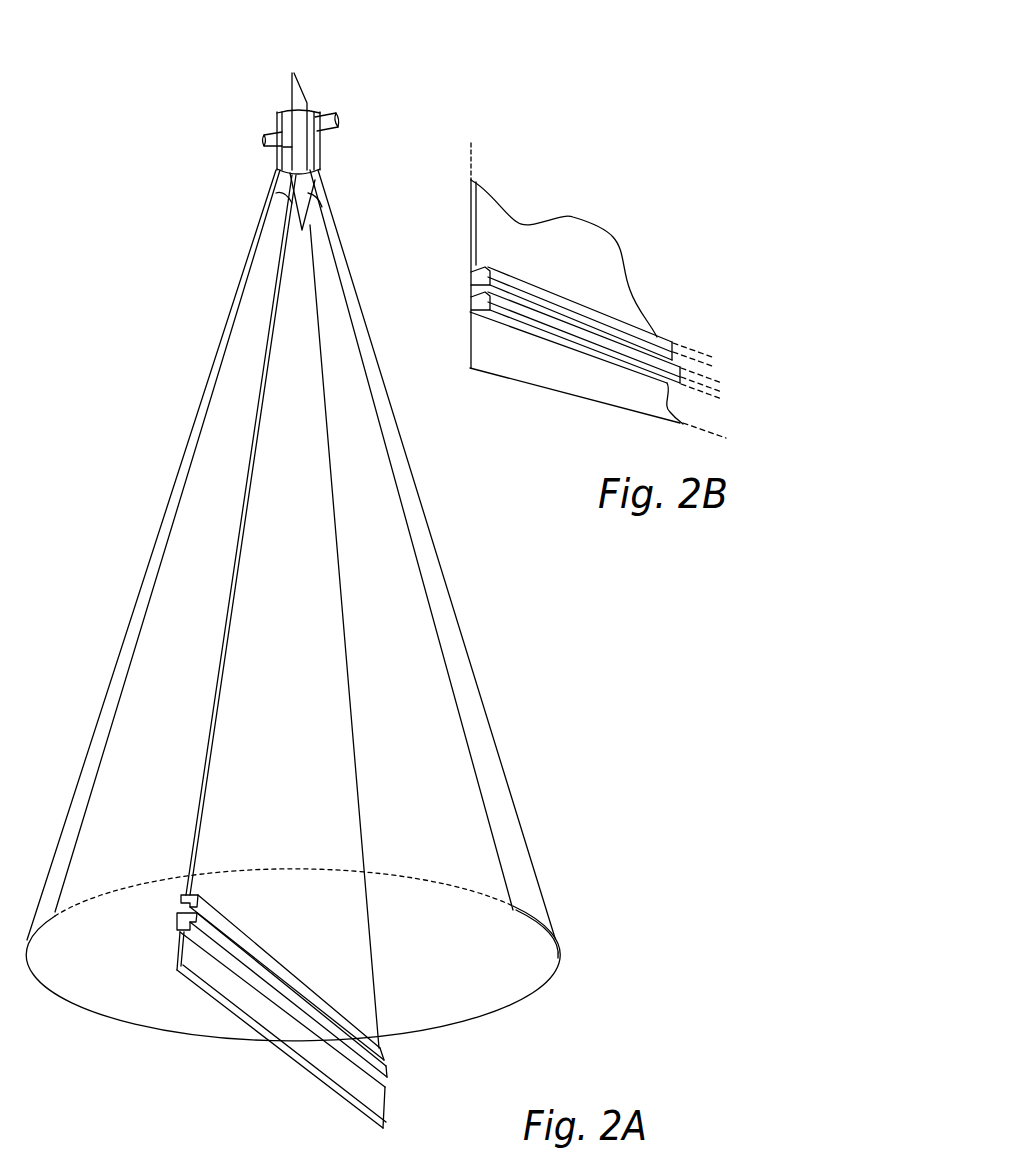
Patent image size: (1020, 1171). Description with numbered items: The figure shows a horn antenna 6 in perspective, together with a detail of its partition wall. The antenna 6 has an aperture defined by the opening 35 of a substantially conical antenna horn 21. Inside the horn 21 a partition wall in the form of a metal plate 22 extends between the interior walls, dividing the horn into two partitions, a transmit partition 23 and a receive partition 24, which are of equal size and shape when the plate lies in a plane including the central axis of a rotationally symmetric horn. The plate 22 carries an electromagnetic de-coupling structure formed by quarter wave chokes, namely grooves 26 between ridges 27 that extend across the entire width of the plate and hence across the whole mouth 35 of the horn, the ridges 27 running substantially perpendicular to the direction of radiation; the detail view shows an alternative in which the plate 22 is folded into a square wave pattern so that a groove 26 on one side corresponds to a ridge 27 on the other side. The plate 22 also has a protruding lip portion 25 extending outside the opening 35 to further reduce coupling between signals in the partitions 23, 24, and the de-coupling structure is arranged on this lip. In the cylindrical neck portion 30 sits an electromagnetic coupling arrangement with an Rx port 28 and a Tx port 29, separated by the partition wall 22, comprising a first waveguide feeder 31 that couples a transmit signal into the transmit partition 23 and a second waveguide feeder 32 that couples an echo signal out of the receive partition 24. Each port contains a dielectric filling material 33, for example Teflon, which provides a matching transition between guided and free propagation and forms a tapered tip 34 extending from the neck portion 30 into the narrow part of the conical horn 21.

In FIG. 2A, the antenna 6 is at (120, 404).
In FIG. 2A, the antenna horn 21 is at (432, 557).
In FIG. 2A, the metal plate 22 is at (320, 737).
In FIG. 2B, the metal plate 22 is at (598, 253).
In FIG. 2A, the transmit partition 23 is at (116, 840).
In FIG. 2A, the receive partition 24 is at (402, 856).
In FIG. 2A, the protruding lip portion 25 is at (290, 1060).
In FIG. 2B, the protruding lip portion 25 is at (583, 393).
In FIG. 2A, the quarter wave chokes 26 is at (388, 1068).
In FIG. 2B, the quarter wave chokes 26 is at (530, 302).
In FIG. 2A, the ridges 27 is at (386, 1050).
In FIG. 2B, the ridges 27 is at (508, 273).
In FIG. 2A, the Rx port 28 is at (268, 99).
In FIG. 2A, the Tx port 29 is at (314, 83).
In FIG. 2A, the cylindrical neck portion 30 is at (320, 143).
In FIG. 2A, the first waveguide feeder 31 is at (263, 135).
In FIG. 2A, the second waveguide feeder 32 is at (338, 118).
In FIG. 2A, the dielectric filling material 33 is at (305, 147).
In FIG. 2A, the tapered tip 34 is at (305, 210).
In FIG. 2A, the opening 35 is at (492, 976).